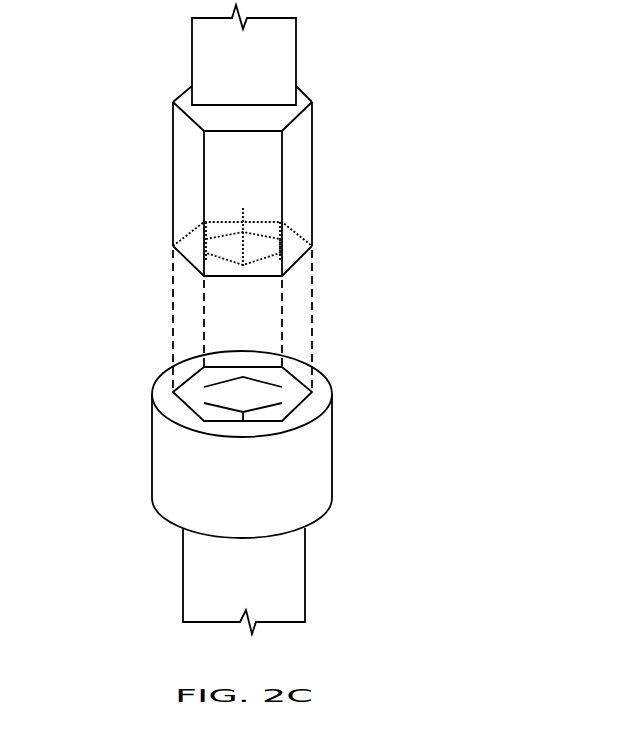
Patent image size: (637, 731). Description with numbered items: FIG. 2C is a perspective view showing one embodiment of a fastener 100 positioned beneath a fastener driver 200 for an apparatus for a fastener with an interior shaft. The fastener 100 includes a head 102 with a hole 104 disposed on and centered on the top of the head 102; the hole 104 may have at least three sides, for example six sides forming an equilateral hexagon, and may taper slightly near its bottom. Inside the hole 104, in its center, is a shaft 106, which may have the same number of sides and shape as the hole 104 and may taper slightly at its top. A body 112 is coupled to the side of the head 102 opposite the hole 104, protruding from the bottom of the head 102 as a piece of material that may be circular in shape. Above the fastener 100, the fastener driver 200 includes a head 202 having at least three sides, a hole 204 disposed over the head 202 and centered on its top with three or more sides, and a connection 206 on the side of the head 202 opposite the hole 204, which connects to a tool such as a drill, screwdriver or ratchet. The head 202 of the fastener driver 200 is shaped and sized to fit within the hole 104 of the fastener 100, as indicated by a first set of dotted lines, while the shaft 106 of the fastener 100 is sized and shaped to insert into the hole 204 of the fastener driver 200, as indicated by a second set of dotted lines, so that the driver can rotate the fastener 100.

The fastener 100 is at (432, 395).
The head 102 is at (122, 372).
The hole 104 is at (311, 393).
The shaft 106 is at (227, 393).
The body 112 is at (347, 517).
The fastener driver 200 is at (117, 100).
The head 202 is at (313, 172).
The hole 204 is at (258, 243).
The connection 206 is at (289, 67).